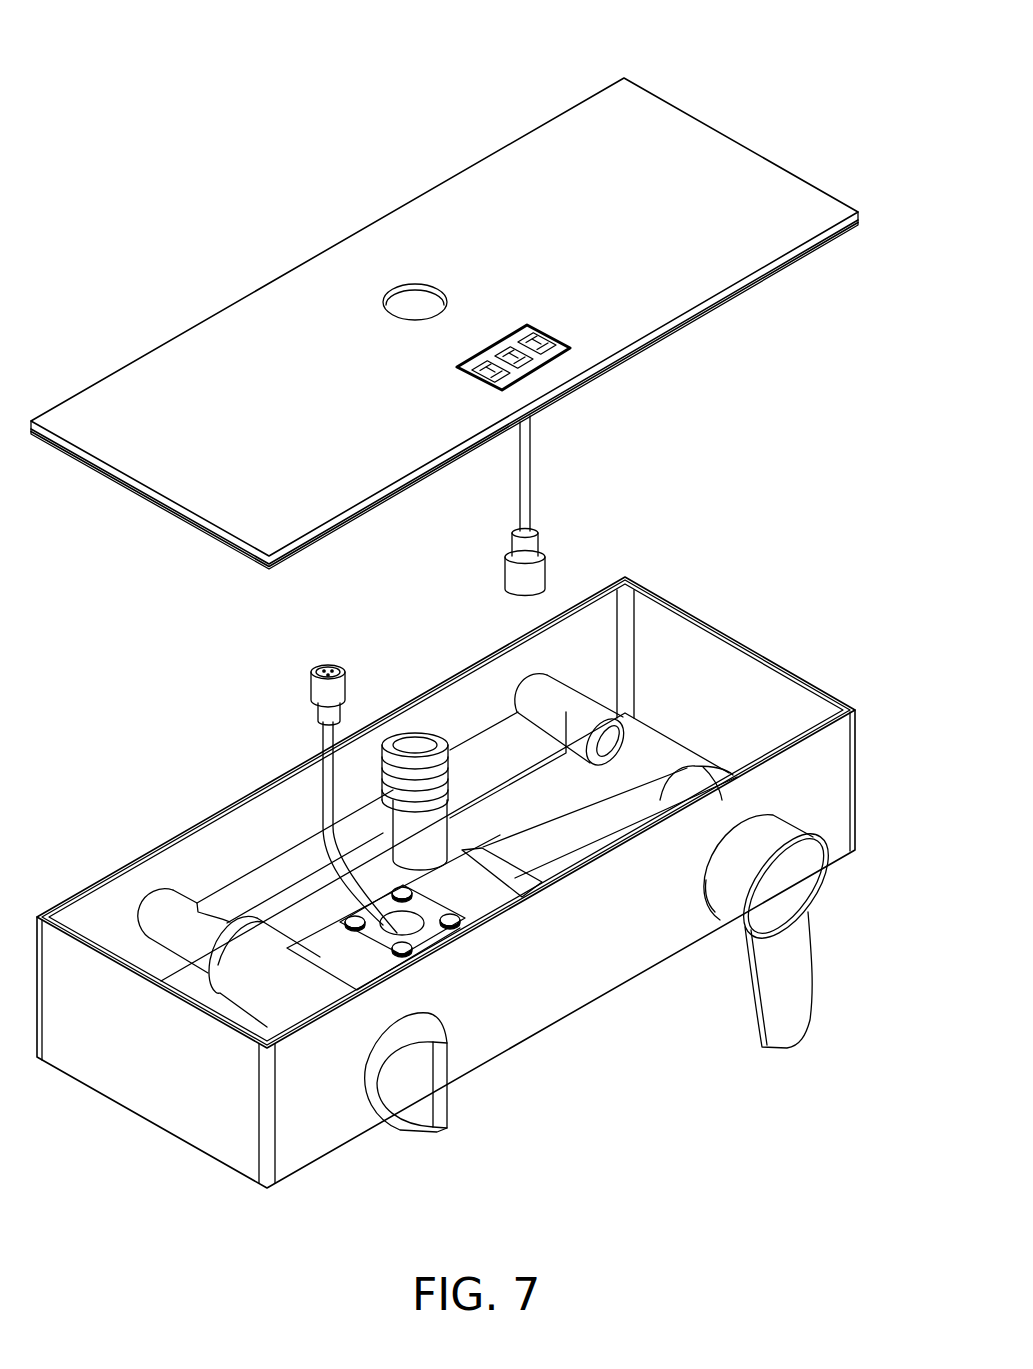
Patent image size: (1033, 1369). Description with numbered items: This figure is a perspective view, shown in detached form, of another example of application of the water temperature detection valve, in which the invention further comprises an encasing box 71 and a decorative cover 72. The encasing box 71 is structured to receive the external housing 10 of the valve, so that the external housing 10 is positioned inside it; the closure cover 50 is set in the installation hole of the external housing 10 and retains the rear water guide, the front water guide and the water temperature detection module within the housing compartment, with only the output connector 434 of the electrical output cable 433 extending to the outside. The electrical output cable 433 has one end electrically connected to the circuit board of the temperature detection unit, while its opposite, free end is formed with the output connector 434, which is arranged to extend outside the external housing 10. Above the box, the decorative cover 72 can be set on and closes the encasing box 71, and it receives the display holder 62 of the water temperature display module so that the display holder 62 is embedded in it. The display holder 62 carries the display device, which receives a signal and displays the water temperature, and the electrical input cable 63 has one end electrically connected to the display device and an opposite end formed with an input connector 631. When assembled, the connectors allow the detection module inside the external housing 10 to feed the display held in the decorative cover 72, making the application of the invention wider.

The external housing 10 is at (333, 913).
The closure cover 50 is at (433, 937).
The display holder 62 is at (568, 336).
The electrical input cable 63 is at (530, 463).
The input connector 631 is at (525, 597).
The encasing box 71 is at (190, 1128).
The decorative cover 72 is at (557, 137).
The electrical output cable 433 is at (330, 782).
The output connector 434 is at (320, 664).